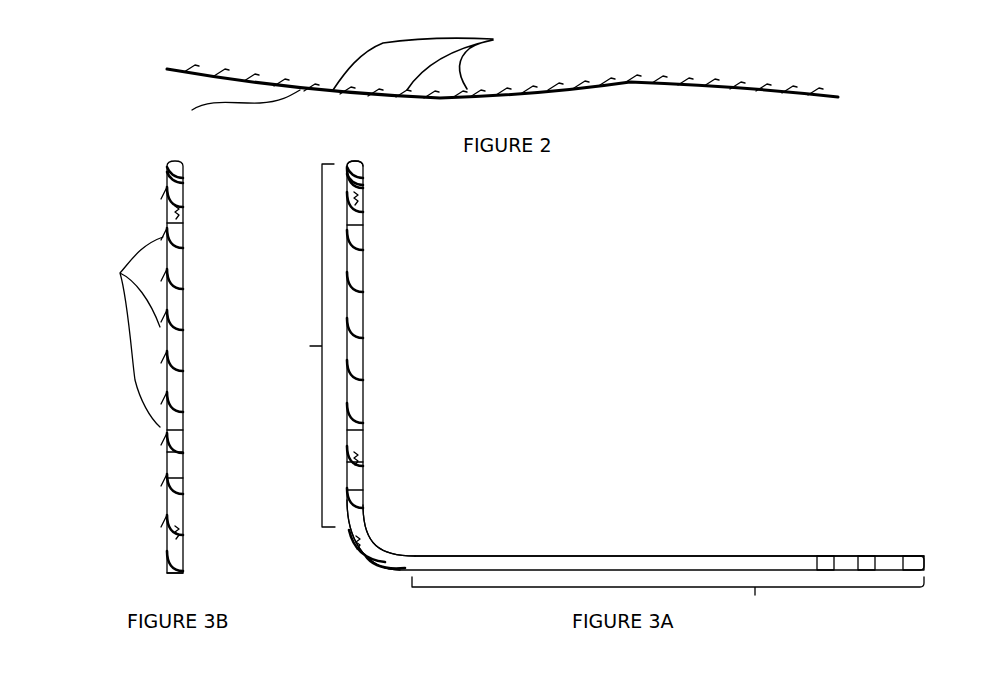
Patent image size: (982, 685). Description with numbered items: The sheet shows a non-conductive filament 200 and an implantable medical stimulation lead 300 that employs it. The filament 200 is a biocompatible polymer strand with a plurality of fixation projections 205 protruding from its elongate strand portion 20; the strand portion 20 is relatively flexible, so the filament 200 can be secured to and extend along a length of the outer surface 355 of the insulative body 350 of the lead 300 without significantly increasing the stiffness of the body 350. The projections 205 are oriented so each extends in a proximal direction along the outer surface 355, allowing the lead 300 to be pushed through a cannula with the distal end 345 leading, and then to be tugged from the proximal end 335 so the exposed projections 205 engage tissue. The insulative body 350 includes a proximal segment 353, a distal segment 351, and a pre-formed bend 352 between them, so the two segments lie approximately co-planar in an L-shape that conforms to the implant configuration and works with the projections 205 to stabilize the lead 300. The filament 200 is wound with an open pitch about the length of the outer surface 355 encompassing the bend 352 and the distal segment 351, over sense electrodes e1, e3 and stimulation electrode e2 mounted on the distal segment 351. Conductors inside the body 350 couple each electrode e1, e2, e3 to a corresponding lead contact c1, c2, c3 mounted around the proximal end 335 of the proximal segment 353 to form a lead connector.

In FIG. 2, the non-conductive filament 200 is at (298, 32).
In FIG. 3B, the non-conductive filament 200 is at (183, 513).
In FIG. 3A, the non-conductive filament 200 is at (363, 218).
In FIG. 2, the fixation projections 205 is at (503, 64).
In FIG. 3B, the fixation projections 205 is at (129, 357).
In FIG. 2, the elongate strand portion 20 is at (236, 110).
In FIG. 3B, the implantable medical stimulation lead 300 is at (182, 365).
In FIG. 3A, the implantable medical stimulation lead 300 is at (602, 381).
In FIG. 3A, the distal end 345 is at (360, 162).
In FIG. 3B, the insulative body 350 is at (170, 570).
In FIG. 3A, the insulative body 350 is at (488, 563).
In FIG. 3A, the distal segment 351 is at (307, 345).
In FIG. 3A, the pre-formed bend 352 is at (357, 573).
In FIG. 3A, the proximal segment 353 is at (668, 596).
In FIG. 3B, the outer surface 355 is at (184, 208).
In FIG. 3A, the outer surface 355 is at (365, 192).
In FIG. 3A, the proximal end 335 is at (856, 506).
In FIG. 3A, the lead contact c1 is at (915, 558).
In FIG. 3A, the lead contact c2 is at (828, 558).
In FIG. 3A, the lead contact c3 is at (870, 558).
In FIG. 3B, the sense electrode e1 is at (184, 165).
In FIG. 3A, the sense electrode e1 is at (365, 170).
In FIG. 3B, the stimulation electrode e2 is at (178, 311).
In FIG. 3A, the stimulation electrode e2 is at (365, 311).
In FIG. 3B, the sense electrode e3 is at (177, 470).
In FIG. 3A, the sense electrode e3 is at (358, 480).